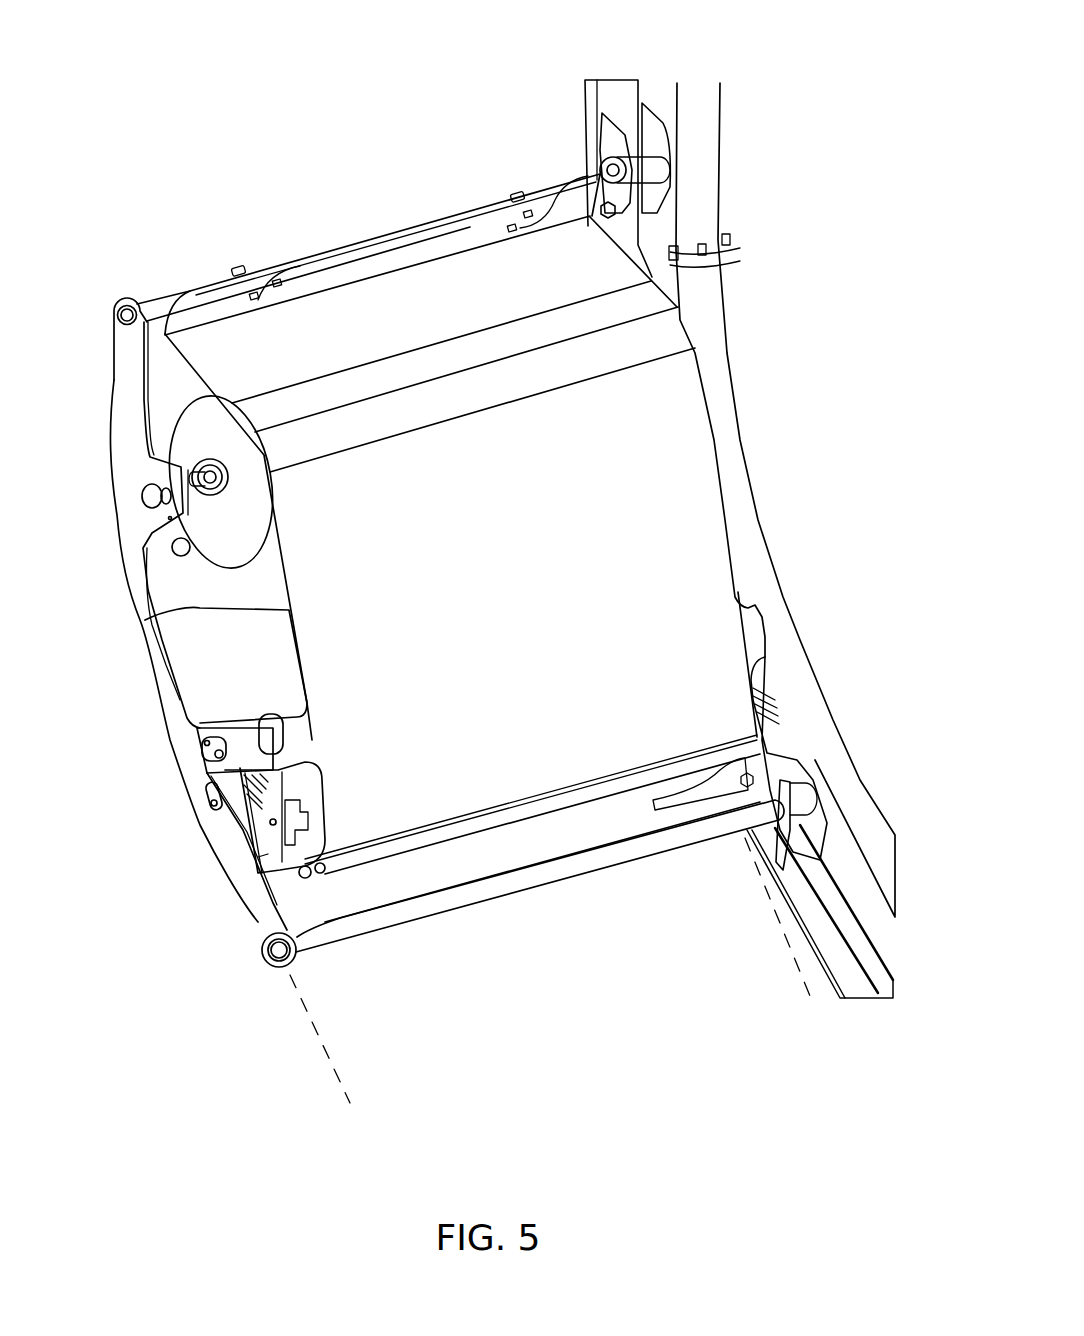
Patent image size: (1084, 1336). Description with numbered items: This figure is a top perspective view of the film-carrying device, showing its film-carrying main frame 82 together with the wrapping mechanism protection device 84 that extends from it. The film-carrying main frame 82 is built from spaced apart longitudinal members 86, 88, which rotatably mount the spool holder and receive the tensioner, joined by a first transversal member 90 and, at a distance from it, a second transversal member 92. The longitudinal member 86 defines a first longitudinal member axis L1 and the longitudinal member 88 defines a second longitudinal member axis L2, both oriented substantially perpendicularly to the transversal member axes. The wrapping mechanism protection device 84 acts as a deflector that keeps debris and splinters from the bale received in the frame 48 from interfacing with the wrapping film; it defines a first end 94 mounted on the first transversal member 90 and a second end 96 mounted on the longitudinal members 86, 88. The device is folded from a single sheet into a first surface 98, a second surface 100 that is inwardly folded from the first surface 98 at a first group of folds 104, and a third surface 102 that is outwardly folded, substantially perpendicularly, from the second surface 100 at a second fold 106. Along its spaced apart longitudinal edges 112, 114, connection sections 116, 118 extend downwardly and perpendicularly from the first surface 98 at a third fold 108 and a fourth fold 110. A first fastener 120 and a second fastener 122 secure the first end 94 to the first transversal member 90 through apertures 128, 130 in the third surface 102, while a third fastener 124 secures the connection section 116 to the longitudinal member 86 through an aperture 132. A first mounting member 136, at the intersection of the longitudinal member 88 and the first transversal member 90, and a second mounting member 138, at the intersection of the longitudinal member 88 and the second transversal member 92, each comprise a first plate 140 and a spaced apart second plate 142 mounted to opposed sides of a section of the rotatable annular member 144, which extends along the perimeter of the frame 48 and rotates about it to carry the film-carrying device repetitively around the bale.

The frame 48 is at (782, 500).
The film-carrying main frame 82 is at (255, 596).
The wrapping mechanism protection device 84 is at (475, 548).
The longitudinal member 86 is at (128, 408).
The longitudinal member 88 is at (612, 158).
The first transversal member 90 is at (160, 308).
The second transversal member 92 is at (468, 893).
The first end 94 is at (418, 353).
The second end 96 is at (555, 817).
The first surface 98 is at (489, 612).
The second surface 100 is at (406, 319).
The third surface 102 is at (364, 268).
The first group of folds 104 is at (474, 335).
The second fold 106 is at (382, 251).
The third fold 108 is at (287, 752).
The fourth fold 110 is at (760, 618).
The longitudinal edge 112 is at (145, 620).
The longitudinal edge 114 is at (723, 512).
The connection section 116 is at (243, 755).
The connection section 118 is at (767, 640).
The first fastener 120 is at (240, 270).
The second fastener 122 is at (507, 192).
The third fastener 124 is at (200, 755).
The aperture 128 is at (280, 282).
The aperture 130 is at (527, 227).
The aperture 132 is at (220, 747).
The first mounting member 136 is at (733, 442).
The second mounting member 138 is at (802, 747).
The first plate 140 is at (608, 138).
The second plate 142 is at (652, 138).
The rotatable annular member 144 is at (867, 962).
The first longitudinal member axis L1 is at (332, 1057).
The second longitudinal member axis L2 is at (783, 948).